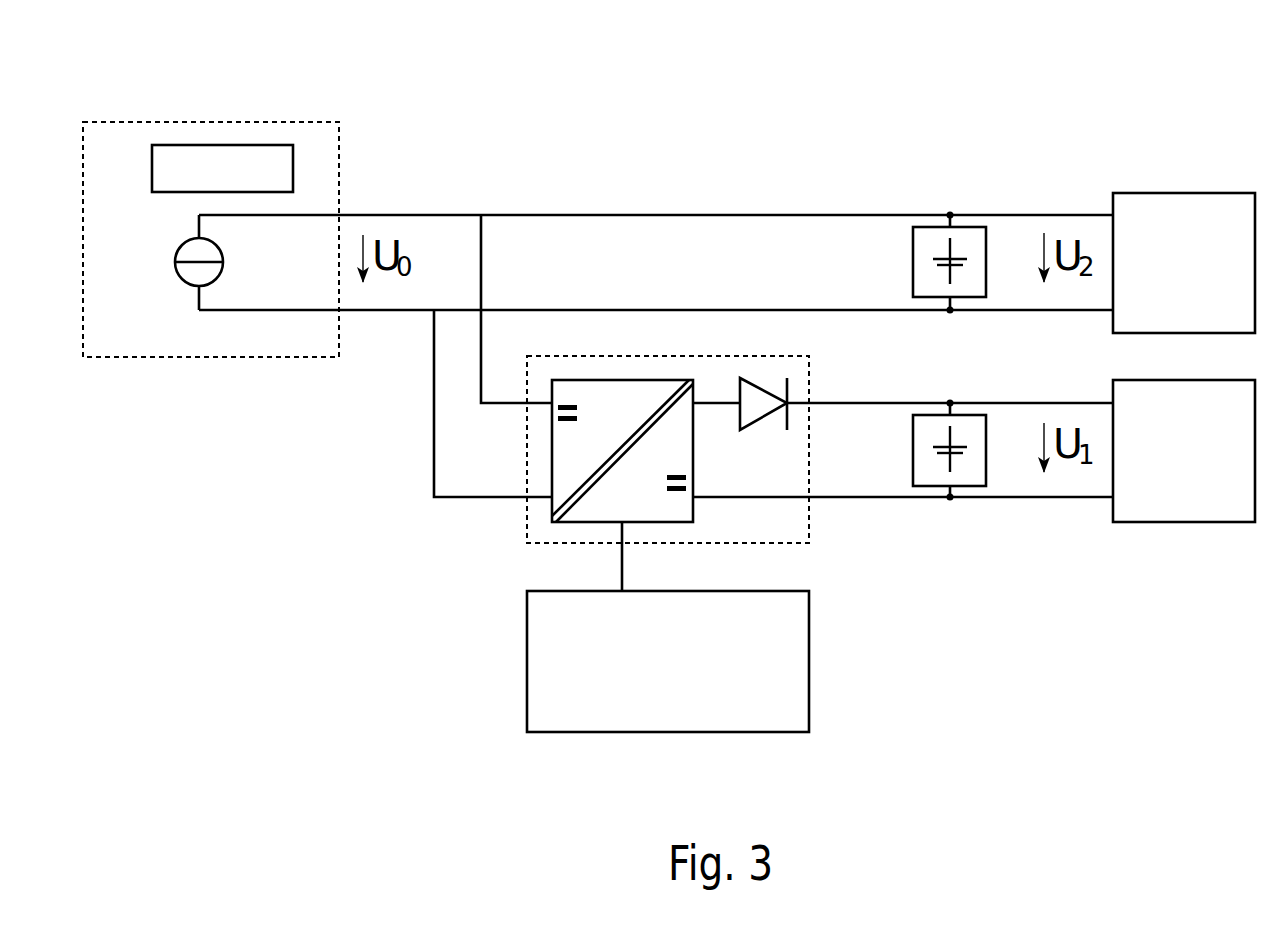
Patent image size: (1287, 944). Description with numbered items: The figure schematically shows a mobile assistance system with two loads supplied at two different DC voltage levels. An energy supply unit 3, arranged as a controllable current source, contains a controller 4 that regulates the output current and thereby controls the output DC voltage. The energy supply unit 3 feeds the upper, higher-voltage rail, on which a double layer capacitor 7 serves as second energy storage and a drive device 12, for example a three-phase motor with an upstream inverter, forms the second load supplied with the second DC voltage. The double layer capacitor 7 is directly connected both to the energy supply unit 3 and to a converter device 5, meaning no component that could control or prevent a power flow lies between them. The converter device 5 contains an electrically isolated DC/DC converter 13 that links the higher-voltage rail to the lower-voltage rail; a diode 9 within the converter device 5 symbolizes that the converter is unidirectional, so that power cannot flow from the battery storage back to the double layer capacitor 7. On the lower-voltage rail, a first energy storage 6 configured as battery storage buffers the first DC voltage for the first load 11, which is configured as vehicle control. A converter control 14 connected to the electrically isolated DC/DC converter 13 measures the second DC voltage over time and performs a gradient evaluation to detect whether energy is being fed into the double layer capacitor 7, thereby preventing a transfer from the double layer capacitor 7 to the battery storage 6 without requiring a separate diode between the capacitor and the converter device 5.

The energy supply unit 3 is at (341, 156).
The controller 4 is at (233, 185).
The converter device 5 is at (813, 527).
The first energy storage 6 is at (970, 470).
The second energy storage 7 is at (970, 243).
The diode 9 is at (763, 372).
The first load 11 is at (1205, 467).
The drive device 12 is at (1205, 281).
The electrically isolated DC/DC converter 13 is at (576, 462).
The converter control 14 is at (688, 680).